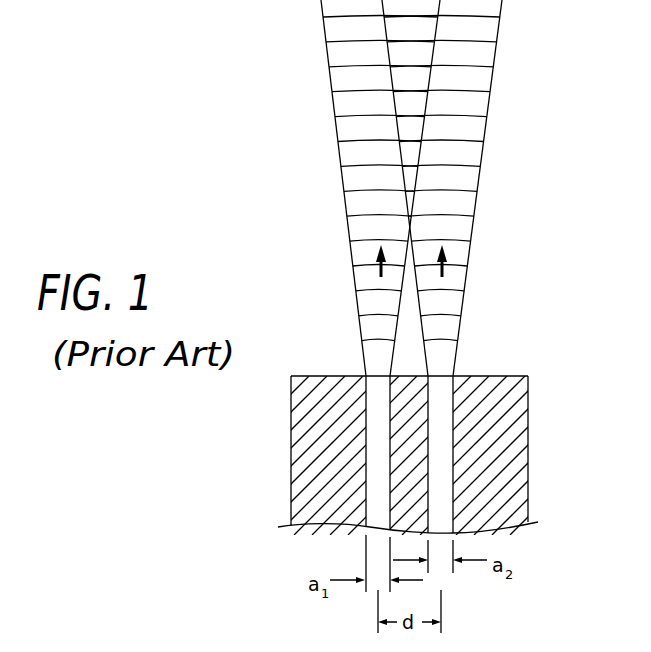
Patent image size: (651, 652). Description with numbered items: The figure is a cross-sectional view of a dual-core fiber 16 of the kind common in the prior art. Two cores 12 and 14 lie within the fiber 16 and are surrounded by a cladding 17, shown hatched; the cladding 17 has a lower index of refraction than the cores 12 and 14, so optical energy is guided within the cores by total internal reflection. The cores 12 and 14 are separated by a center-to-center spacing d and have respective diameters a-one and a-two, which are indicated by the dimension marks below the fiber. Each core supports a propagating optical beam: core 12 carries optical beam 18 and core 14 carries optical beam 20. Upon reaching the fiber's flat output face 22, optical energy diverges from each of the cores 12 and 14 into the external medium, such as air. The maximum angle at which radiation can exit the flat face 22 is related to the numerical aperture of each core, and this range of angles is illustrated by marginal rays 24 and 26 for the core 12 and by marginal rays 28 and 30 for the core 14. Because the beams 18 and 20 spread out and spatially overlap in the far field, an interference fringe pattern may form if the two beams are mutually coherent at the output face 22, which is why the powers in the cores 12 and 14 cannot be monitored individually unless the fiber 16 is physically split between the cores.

The core 12 is at (370, 458).
The core 14 is at (447, 467).
The fiber 16 is at (242, 433).
The cladding 17 is at (508, 403).
The optical beam 18 is at (368, 203).
The optical beam 20 is at (447, 203).
The flat output face 22 is at (488, 377).
The marginal ray 24 is at (360, 337).
The marginal ray 26 is at (390, 307).
The marginal ray 28 is at (423, 307).
The marginal ray 30 is at (462, 330).